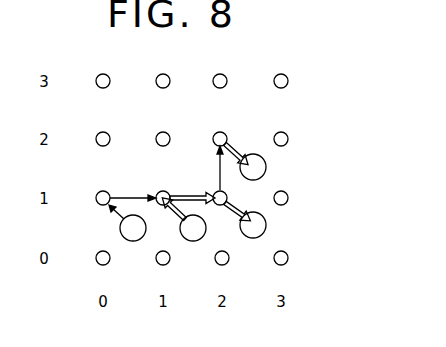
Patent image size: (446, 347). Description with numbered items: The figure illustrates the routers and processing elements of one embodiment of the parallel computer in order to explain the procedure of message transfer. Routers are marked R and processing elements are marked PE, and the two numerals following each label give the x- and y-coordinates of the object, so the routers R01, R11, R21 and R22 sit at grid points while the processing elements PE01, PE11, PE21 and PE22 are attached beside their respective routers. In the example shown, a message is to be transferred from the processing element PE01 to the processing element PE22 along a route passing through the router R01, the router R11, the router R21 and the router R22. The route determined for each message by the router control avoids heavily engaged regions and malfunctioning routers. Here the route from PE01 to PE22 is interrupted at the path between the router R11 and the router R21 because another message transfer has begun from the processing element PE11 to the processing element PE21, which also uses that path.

The router R01 is at (102, 189).
The router R11 is at (161, 189).
The router R21 is at (206, 189).
The router R22 is at (218, 130).
The processing element PE01 is at (110, 228).
The processing element PE11 is at (205, 229).
The processing element PE21 is at (276, 225).
The processing element PE22 is at (271, 167).